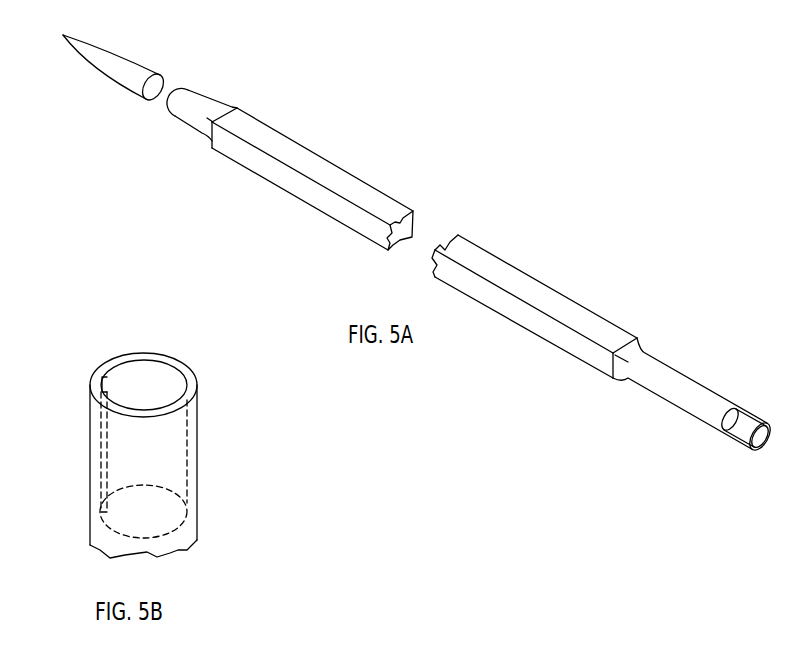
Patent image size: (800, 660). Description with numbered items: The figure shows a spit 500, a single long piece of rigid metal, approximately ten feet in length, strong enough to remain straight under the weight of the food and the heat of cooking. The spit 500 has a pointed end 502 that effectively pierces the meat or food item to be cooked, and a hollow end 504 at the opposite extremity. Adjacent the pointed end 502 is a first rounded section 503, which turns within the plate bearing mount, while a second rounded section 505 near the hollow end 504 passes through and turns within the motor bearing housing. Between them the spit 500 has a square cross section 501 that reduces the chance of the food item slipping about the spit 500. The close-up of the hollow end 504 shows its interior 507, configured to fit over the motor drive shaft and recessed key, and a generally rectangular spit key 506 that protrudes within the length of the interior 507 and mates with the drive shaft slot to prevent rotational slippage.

In FIG. 5A, the spit 500 is at (453, 140).
In FIG. 5A, the square cross section 501 is at (298, 142).
In FIG. 5A, the pointed end 502 is at (64, 36).
In FIG. 5A, the first rounded section 503 is at (143, 64).
In FIG. 5A, the hollow end 504 is at (767, 438).
In FIG. 5B, the hollow end 504 is at (185, 352).
In FIG. 5A, the second rounded section 505 is at (692, 380).
In FIG. 5B, the second rounded section 505 is at (197, 533).
In FIG. 5B, the spit key 506 is at (108, 378).
In FIG. 5B, the interior 507 is at (135, 375).